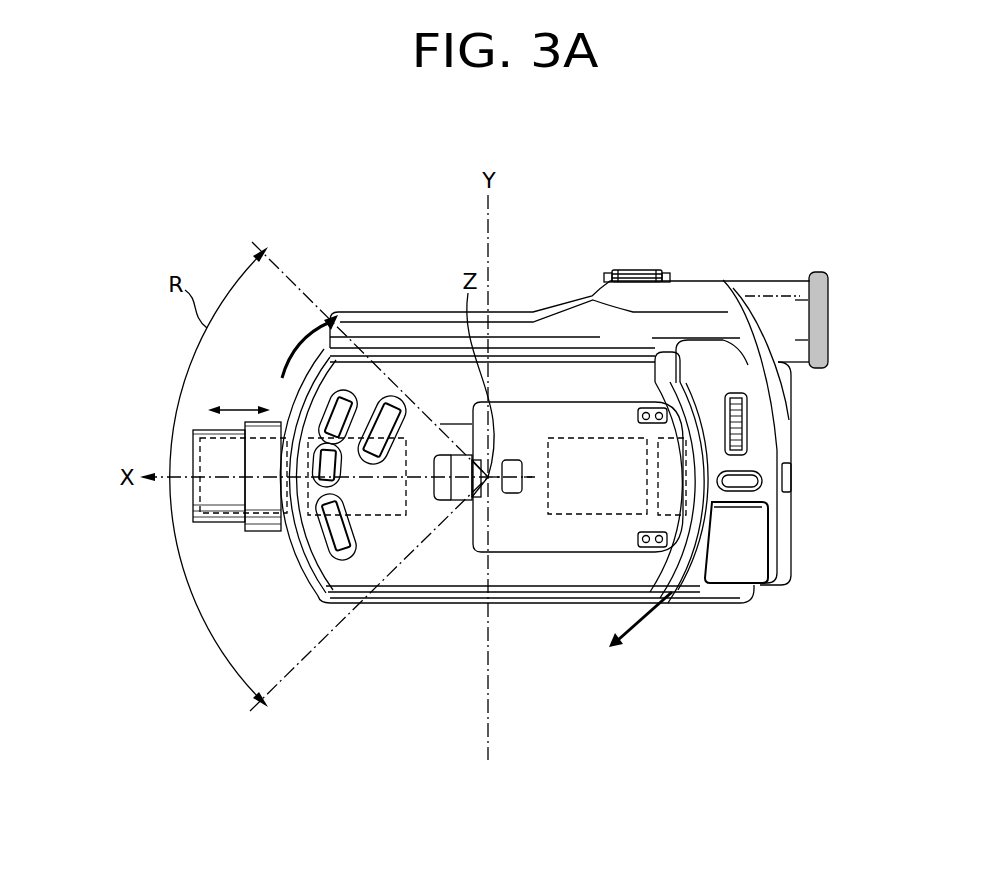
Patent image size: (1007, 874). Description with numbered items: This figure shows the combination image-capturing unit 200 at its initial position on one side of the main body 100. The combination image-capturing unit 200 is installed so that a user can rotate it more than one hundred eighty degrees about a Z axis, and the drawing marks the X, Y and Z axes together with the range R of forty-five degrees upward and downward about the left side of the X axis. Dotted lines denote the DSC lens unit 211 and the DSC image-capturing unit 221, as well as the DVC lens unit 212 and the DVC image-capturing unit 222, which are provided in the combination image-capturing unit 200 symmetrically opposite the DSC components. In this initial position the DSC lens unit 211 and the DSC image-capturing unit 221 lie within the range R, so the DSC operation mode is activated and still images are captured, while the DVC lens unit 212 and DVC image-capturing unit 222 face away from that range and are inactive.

The main body 100 is at (367, 336).
The combination image-capturing unit 200 is at (453, 586).
The DSC lens unit 211 is at (202, 452).
The DVC lens unit 212 is at (684, 516).
The DSC image-capturing unit 221 is at (396, 515).
The DVC image-capturing unit 222 is at (575, 516).